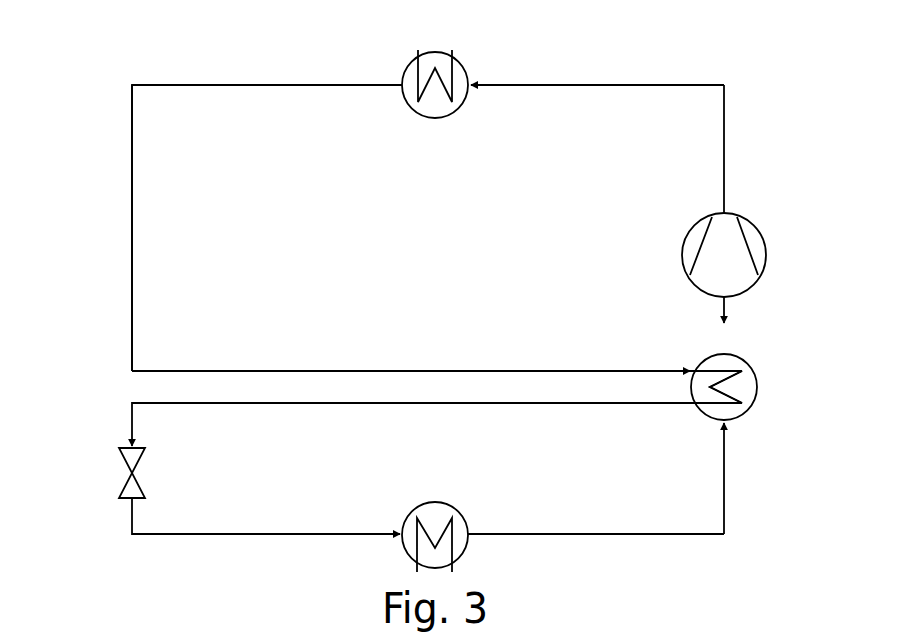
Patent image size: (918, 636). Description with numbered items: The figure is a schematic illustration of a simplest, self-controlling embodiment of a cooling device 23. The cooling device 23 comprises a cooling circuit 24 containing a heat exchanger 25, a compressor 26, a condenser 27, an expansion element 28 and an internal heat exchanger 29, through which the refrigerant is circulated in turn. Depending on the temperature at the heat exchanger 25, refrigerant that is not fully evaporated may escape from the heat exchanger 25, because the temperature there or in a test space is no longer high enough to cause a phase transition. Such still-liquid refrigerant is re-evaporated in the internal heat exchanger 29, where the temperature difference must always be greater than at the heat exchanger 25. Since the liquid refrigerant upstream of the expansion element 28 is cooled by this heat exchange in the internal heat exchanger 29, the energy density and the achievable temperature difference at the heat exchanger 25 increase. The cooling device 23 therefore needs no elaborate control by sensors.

The cooling device 23 is at (110, 90).
The cooling circuit 24 is at (128, 166).
The heat exchanger 25 is at (435, 518).
The compressor 26 is at (730, 228).
The condenser 27 is at (455, 73).
The expansion element 28 is at (128, 487).
The internal heat exchanger 29 is at (747, 388).